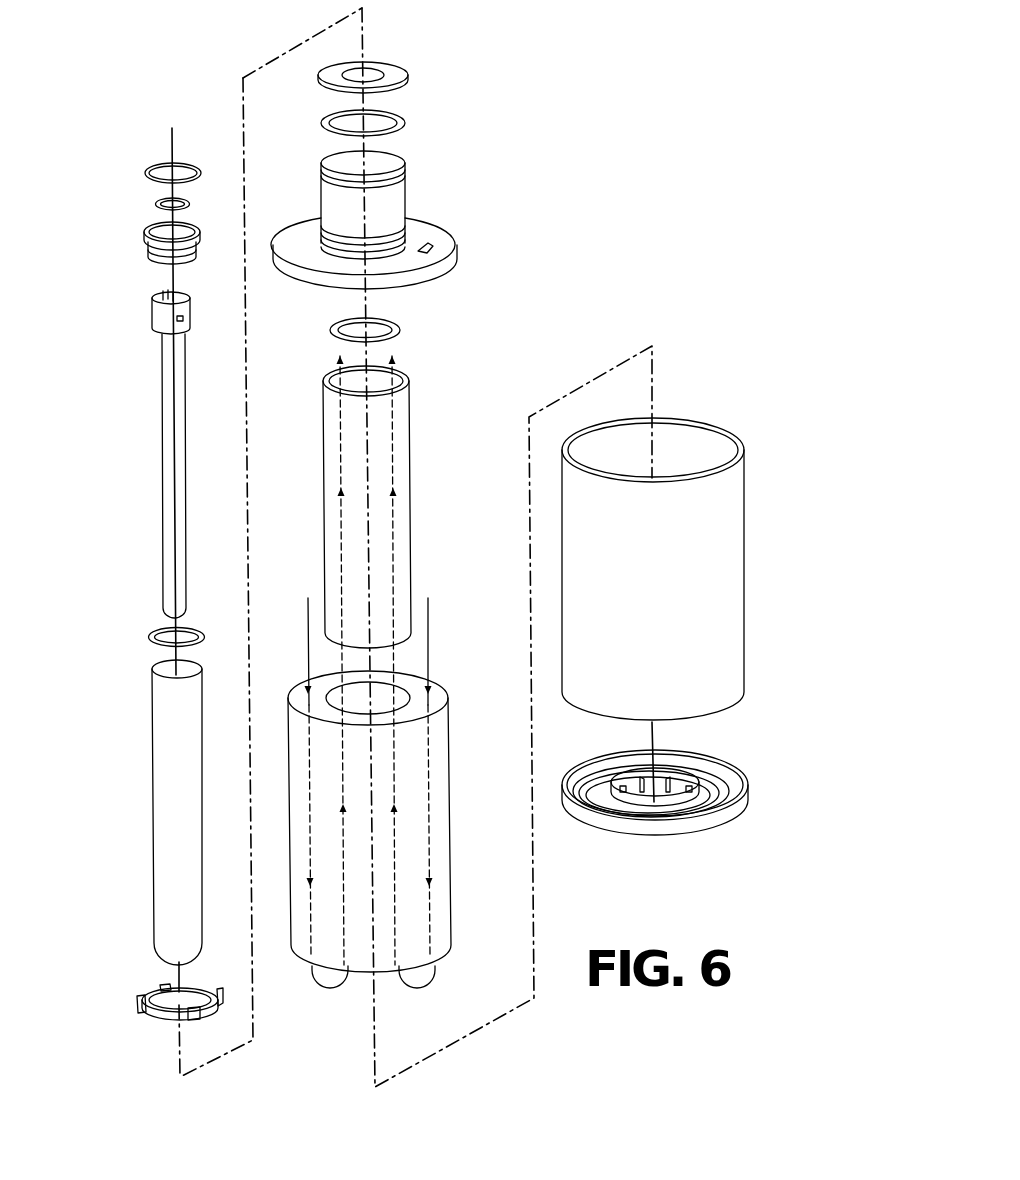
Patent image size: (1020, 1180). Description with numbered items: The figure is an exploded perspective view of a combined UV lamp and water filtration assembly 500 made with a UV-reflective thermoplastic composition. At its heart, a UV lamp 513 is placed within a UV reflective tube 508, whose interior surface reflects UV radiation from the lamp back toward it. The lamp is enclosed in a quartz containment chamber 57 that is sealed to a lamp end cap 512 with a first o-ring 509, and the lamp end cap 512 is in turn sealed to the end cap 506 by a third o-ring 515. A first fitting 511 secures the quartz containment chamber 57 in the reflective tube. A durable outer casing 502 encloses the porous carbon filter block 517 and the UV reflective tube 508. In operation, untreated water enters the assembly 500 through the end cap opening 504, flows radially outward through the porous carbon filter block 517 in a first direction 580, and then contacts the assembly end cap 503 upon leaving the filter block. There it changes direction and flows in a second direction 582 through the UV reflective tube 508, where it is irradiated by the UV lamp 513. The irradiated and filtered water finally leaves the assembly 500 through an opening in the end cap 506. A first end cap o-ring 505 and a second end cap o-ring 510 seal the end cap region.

The assembly 500 is at (548, 284).
The durable outer casing 502 is at (743, 572).
The assembly end cap 503 is at (750, 798).
The end cap opening 504 is at (440, 270).
The first end cap o-ring 505 is at (401, 329).
The end cap 506 is at (405, 73).
The UV reflective tube 508 is at (407, 496).
The first o-ring 509 is at (152, 641).
The second end cap o-ring 510 is at (156, 204).
The first fitting 511 is at (164, 1020).
The lamp end cap 512 is at (147, 253).
The UV lamp 513 is at (160, 452).
The third o-ring 515 is at (146, 171).
The porous carbon filter block 517 is at (449, 818).
The quartz containment chamber 57 is at (153, 800).
The first direction 580 is at (310, 645).
The second direction 582 is at (321, 377).